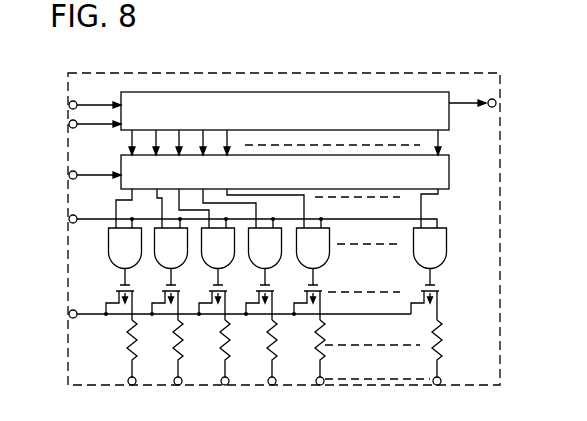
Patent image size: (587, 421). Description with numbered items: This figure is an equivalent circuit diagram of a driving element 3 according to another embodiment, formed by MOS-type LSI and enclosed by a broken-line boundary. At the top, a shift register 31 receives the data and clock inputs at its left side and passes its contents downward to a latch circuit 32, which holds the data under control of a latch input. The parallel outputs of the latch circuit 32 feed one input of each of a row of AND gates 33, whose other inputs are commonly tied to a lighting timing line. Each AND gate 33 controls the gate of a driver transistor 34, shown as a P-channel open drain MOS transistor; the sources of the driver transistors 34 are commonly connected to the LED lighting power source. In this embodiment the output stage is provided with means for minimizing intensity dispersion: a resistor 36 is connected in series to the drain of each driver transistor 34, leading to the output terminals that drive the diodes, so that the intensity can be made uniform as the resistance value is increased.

The driving element 3 is at (490, 178).
The shift register 31 is at (232, 100).
The latch circuit 32 is at (308, 160).
The AND gate 33 is at (108, 243).
The driver transistor 34 is at (116, 291).
The resistor 36 is at (136, 330).